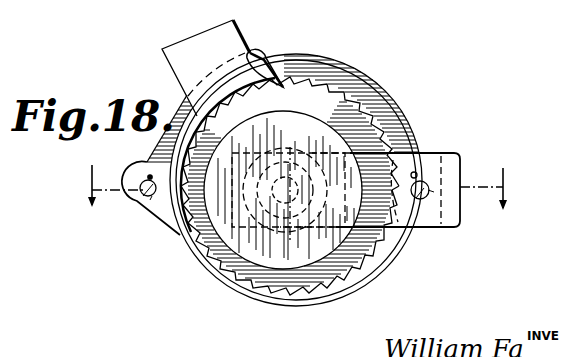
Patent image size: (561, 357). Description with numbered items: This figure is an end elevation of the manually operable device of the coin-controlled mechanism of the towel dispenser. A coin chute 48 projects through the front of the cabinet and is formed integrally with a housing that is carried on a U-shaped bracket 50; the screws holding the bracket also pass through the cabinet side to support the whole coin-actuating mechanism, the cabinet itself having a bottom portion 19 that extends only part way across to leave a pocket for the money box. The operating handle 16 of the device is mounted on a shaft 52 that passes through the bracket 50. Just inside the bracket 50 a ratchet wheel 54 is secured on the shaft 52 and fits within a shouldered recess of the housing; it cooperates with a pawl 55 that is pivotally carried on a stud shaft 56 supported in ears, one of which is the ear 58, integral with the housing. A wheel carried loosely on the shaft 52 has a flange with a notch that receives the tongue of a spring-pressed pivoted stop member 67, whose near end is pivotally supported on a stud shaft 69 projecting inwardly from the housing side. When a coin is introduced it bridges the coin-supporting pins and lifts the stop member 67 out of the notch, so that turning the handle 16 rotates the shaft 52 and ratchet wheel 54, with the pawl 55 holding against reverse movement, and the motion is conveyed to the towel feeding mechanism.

The operating handle 16 is at (258, 237).
The bottom portion 19 is at (296, 187).
The coin chute 48 is at (192, 50).
The U-shaped bracket 50 is at (448, 177).
The shaft 52 is at (313, 247).
The ratchet wheel 54 is at (280, 297).
The pawl 55 is at (283, 52).
The stud shaft 56 is at (423, 180).
The ear 58 is at (400, 205).
The stop member 67 is at (172, 112).
The stud shaft 69 is at (147, 190).